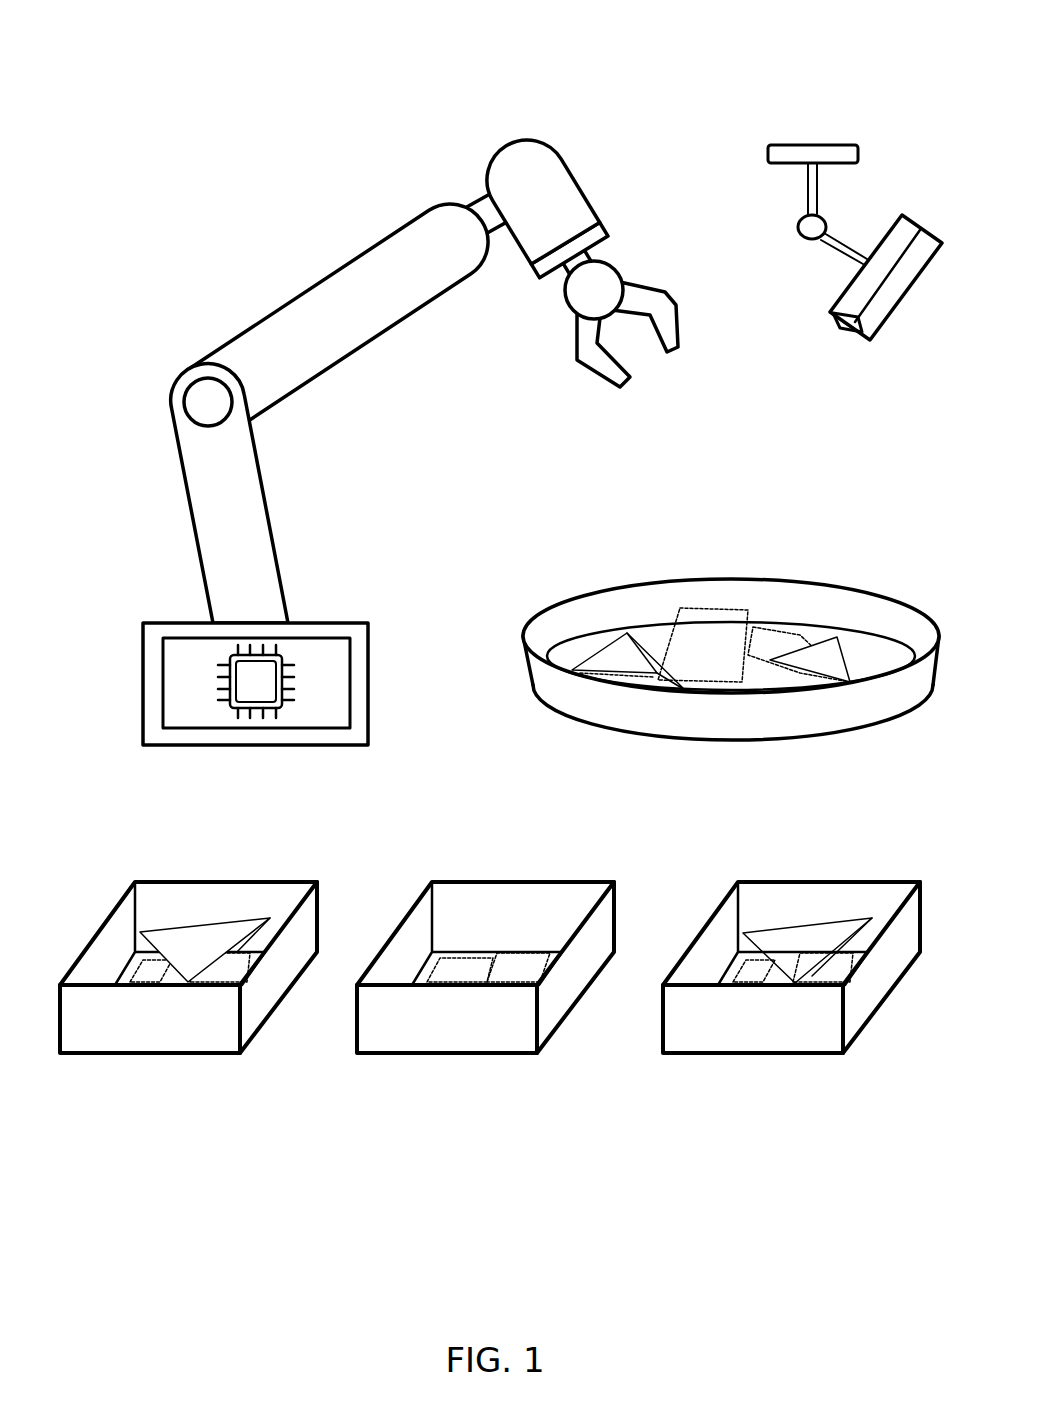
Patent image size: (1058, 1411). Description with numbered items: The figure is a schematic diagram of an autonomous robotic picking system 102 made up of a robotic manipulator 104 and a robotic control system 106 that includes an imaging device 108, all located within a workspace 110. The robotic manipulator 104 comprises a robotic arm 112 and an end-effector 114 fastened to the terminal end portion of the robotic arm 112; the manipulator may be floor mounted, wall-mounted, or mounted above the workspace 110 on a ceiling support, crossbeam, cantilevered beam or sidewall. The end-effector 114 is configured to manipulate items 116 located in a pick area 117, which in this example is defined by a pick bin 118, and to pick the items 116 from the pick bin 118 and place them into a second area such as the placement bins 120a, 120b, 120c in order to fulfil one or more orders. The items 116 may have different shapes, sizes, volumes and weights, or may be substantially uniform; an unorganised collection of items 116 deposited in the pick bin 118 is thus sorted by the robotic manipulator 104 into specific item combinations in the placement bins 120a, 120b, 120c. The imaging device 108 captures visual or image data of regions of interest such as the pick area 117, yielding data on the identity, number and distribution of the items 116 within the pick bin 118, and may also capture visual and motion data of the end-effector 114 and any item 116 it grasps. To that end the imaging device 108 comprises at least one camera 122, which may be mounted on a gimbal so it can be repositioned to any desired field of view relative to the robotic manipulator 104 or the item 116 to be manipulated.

The autonomous robotic picking system 102 is at (375, 405).
The robotic manipulator 104 is at (316, 256).
The robotic control system 106 is at (205, 730).
The imaging device 108 is at (895, 352).
The workspace 110 is at (844, 277).
The robotic arm 112 is at (180, 462).
The end-effector 114 is at (577, 362).
The item 116 is at (597, 647).
The pick area 117 is at (742, 725).
The pick bin 118 is at (545, 692).
The placement bin 120a is at (153, 1055).
The placement bin 120b is at (450, 1055).
The placement bin 120c is at (756, 1055).
The camera 122 is at (898, 212).